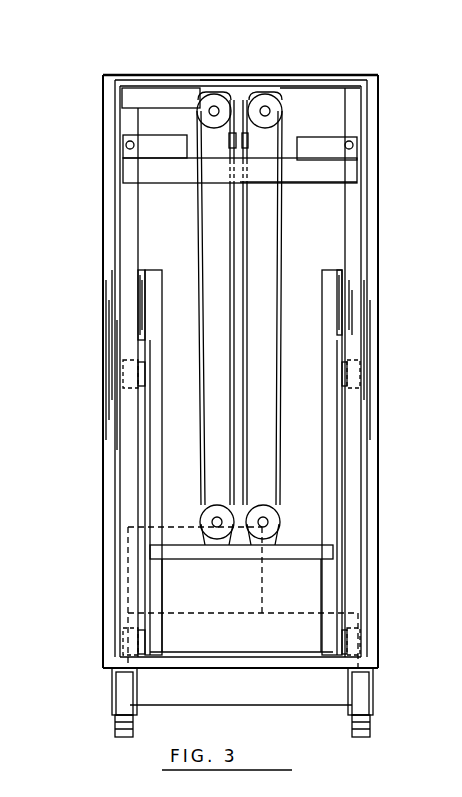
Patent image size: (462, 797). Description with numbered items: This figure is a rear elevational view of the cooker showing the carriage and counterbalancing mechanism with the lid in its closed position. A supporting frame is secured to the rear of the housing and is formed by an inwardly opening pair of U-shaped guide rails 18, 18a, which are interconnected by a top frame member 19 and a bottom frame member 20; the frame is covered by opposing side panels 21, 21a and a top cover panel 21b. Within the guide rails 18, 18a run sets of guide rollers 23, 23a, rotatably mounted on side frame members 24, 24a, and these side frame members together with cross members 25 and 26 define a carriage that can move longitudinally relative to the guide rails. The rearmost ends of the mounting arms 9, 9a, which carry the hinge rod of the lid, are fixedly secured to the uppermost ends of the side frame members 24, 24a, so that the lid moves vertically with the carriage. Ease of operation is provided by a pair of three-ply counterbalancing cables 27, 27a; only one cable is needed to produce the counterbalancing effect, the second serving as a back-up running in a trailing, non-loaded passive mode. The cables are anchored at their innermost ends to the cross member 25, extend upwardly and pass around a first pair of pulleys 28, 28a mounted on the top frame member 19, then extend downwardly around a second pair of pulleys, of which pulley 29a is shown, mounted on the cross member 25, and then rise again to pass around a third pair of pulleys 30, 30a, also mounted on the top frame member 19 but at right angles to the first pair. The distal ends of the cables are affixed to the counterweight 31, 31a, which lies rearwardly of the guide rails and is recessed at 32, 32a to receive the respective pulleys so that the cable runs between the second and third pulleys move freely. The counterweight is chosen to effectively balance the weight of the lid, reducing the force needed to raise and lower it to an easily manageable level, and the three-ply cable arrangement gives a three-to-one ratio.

The mounting arm 9 is at (148, 313).
The mounting arm 9a is at (337, 297).
The U-shaped guide rail 18 is at (137, 210).
The U-shaped guide rail 18a is at (345, 205).
The top frame member 19 is at (138, 98).
The bottom frame member 20 is at (230, 664).
The side panel 21 is at (104, 241).
The side panel 21a is at (378, 244).
The top cover panel 21b is at (265, 76).
The guide rollers 23 is at (123, 375).
The guide rollers 23a is at (360, 376).
The side frame member 24 is at (153, 353).
The side frame member 24a is at (332, 358).
The cross member 25 is at (295, 552).
The cross member 26 is at (263, 652).
The counterbalancing cable 27 is at (200, 238).
The counterbalancing cable 27a is at (283, 237).
The first pulley 28 is at (236, 78).
The first pulley 28a is at (250, 78).
The second pulley 29a is at (265, 508).
The third pulley 30 is at (214, 94).
The third pulley 30a is at (272, 108).
The counterweight 31 is at (233, 150).
The counterweight 31a is at (248, 147).
The recess 32 is at (240, 170).
The recess 32a is at (240, 170).